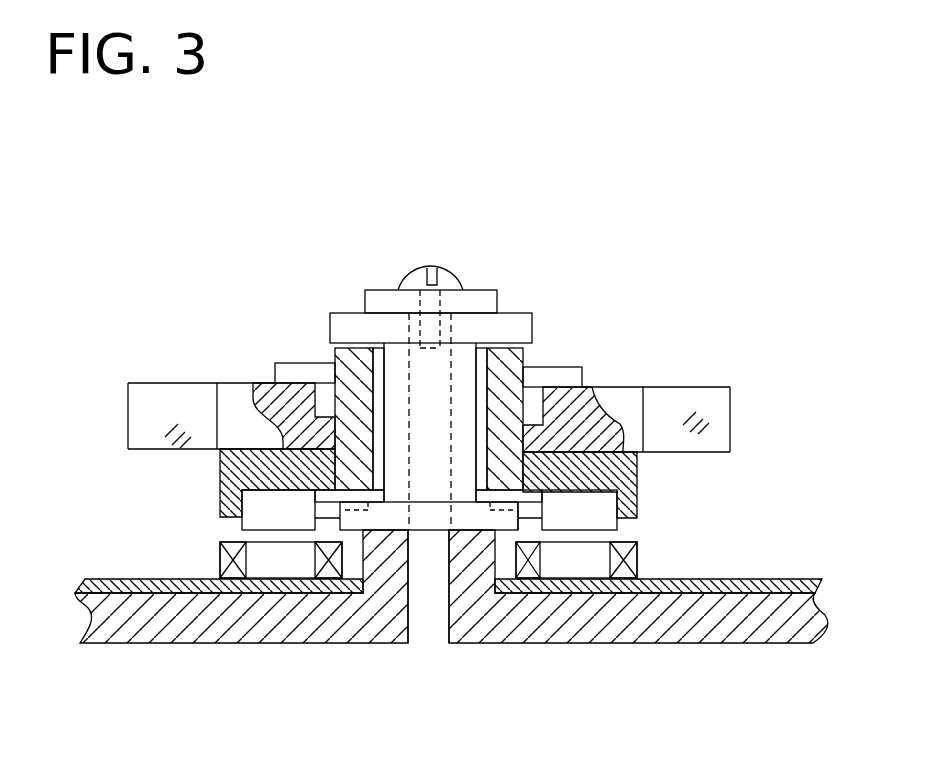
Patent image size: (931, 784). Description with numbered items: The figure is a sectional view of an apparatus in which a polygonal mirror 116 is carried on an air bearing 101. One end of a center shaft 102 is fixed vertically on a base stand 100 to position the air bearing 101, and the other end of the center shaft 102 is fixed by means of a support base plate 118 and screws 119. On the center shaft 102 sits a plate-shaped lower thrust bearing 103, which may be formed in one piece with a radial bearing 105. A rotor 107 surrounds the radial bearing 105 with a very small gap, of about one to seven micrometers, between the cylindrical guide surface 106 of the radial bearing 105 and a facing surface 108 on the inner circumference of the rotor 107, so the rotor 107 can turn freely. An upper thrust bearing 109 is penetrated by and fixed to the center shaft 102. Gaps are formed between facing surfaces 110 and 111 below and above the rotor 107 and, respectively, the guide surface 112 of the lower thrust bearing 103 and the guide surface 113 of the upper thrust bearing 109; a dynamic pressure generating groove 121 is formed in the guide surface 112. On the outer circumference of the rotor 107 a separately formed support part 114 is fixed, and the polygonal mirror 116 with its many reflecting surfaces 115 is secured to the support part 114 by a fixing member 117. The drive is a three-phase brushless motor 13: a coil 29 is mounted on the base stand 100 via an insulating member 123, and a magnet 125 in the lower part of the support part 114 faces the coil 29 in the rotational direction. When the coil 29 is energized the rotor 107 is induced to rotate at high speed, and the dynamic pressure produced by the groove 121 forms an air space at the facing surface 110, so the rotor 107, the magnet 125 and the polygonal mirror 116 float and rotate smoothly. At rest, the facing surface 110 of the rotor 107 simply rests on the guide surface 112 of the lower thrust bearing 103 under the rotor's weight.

The base stand 100 is at (720, 633).
The air bearing 101 is at (630, 307).
The center shaft 102 is at (428, 645).
The lower thrust bearing 103 is at (382, 517).
The radial bearing 105 is at (430, 490).
The guide surface 106 is at (477, 393).
The rotor 107 is at (512, 378).
The facing surface 108 is at (335, 432).
The upper thrust bearing 109 is at (350, 328).
The facing surface 110 is at (348, 492).
The facing surface 111 is at (350, 340).
The guide surface 112 is at (473, 497).
The guide surface 113 is at (462, 358).
The support part 114 is at (622, 463).
The reflecting surfaces 115 is at (715, 410).
The polygonal mirror 116 is at (645, 420).
The fixing member 117 is at (295, 372).
The support base plate 118 is at (377, 303).
The screws 119 is at (443, 282).
The dynamic pressure generating groove 121 is at (503, 513).
The insulating member 123 is at (130, 582).
The magnet 125 is at (258, 507).
The three-phase brushless motor 13 is at (198, 525).
The coil 29 is at (233, 573).